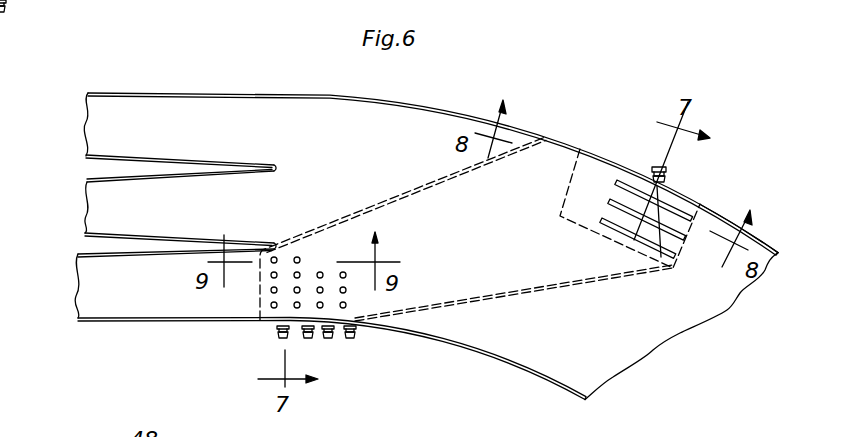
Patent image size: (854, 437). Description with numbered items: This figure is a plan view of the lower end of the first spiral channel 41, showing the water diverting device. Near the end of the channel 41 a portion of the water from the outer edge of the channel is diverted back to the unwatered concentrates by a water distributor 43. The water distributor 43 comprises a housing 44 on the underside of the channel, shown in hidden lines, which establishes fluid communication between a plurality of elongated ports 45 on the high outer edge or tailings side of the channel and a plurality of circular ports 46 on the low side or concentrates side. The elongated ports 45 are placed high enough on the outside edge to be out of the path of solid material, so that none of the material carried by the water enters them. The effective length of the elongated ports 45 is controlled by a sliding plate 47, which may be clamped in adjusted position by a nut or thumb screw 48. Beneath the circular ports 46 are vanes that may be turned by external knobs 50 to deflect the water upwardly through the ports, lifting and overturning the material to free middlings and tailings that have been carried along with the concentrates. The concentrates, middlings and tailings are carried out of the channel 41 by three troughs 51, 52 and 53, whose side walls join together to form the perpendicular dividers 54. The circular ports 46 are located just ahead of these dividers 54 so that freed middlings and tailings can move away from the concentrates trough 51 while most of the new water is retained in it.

The channel 41 is at (640, 346).
The water distributor 43 is at (678, 178).
The housing 44 is at (452, 306).
The elongated ports 45 is at (672, 208).
The circular ports 46 is at (295, 294).
The sliding plate 47 is at (581, 148).
The nut or thumb screw 48 is at (656, 167).
The external knobs 50 is at (288, 338).
The concentrates trough 51 is at (110, 302).
The trough 52 is at (87, 202).
The trough 53 is at (107, 108).
The perpendicular dividers 54 is at (278, 245).